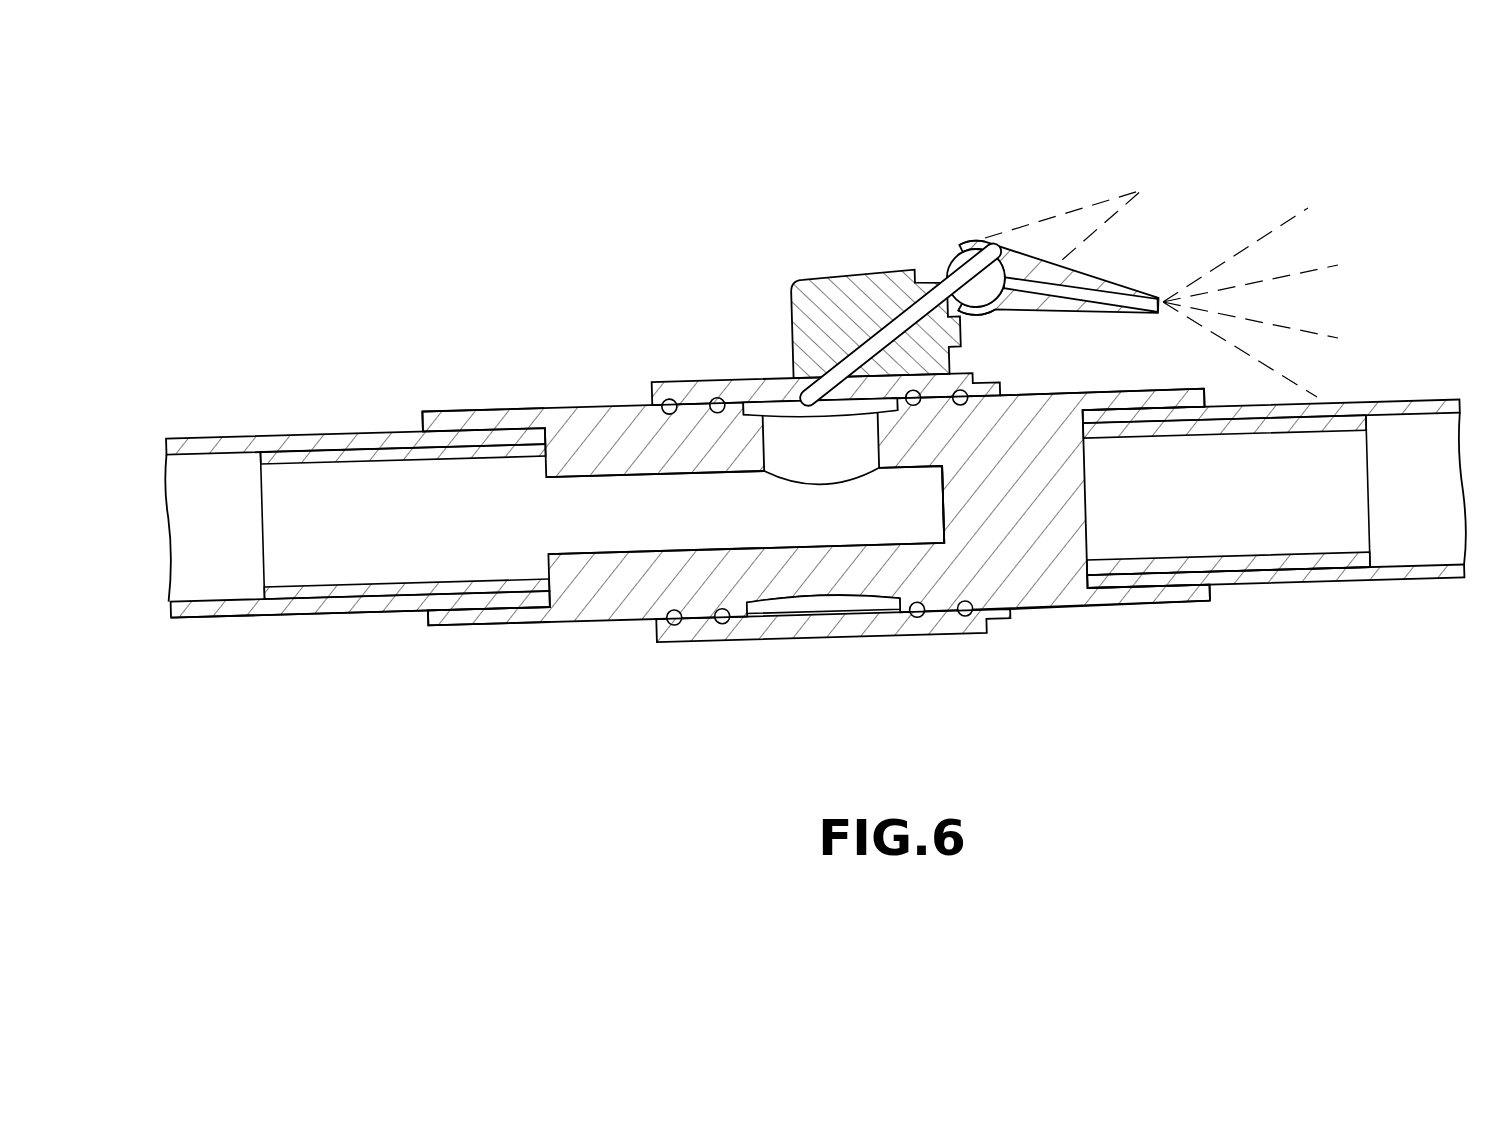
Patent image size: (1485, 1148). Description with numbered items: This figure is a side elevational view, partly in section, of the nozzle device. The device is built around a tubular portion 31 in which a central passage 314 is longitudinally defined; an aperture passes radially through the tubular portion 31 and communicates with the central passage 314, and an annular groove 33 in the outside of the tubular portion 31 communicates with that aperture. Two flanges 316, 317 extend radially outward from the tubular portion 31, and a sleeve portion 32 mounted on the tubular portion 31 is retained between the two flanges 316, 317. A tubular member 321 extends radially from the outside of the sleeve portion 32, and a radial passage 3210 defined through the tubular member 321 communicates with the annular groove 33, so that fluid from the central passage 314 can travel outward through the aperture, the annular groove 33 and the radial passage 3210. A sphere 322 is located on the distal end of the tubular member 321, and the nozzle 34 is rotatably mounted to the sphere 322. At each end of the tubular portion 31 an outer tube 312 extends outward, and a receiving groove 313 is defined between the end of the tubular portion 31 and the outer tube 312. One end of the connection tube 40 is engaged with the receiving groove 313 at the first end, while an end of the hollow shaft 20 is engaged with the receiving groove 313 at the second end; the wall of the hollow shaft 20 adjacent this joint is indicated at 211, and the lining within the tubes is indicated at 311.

The hollow shaft 20 is at (193, 436).
The tube wall 211 is at (216, 615).
The tubular portion 31 is at (576, 396).
The inner sleeve 311 is at (345, 592).
The outer tube 312 is at (508, 620).
The receiving groove 313 is at (1200, 580).
The central passage 314 is at (617, 530).
The flange 316 is at (1008, 620).
The flange 317 is at (642, 395).
The sleeve portion 32 is at (790, 632).
The annular groove 33 is at (877, 608).
The tubular member 321 is at (850, 290).
The radial passage 3210 is at (944, 292).
The sphere 322 is at (1010, 322).
The nozzle 34 is at (1122, 300).
The connection tube 40 is at (1432, 588).